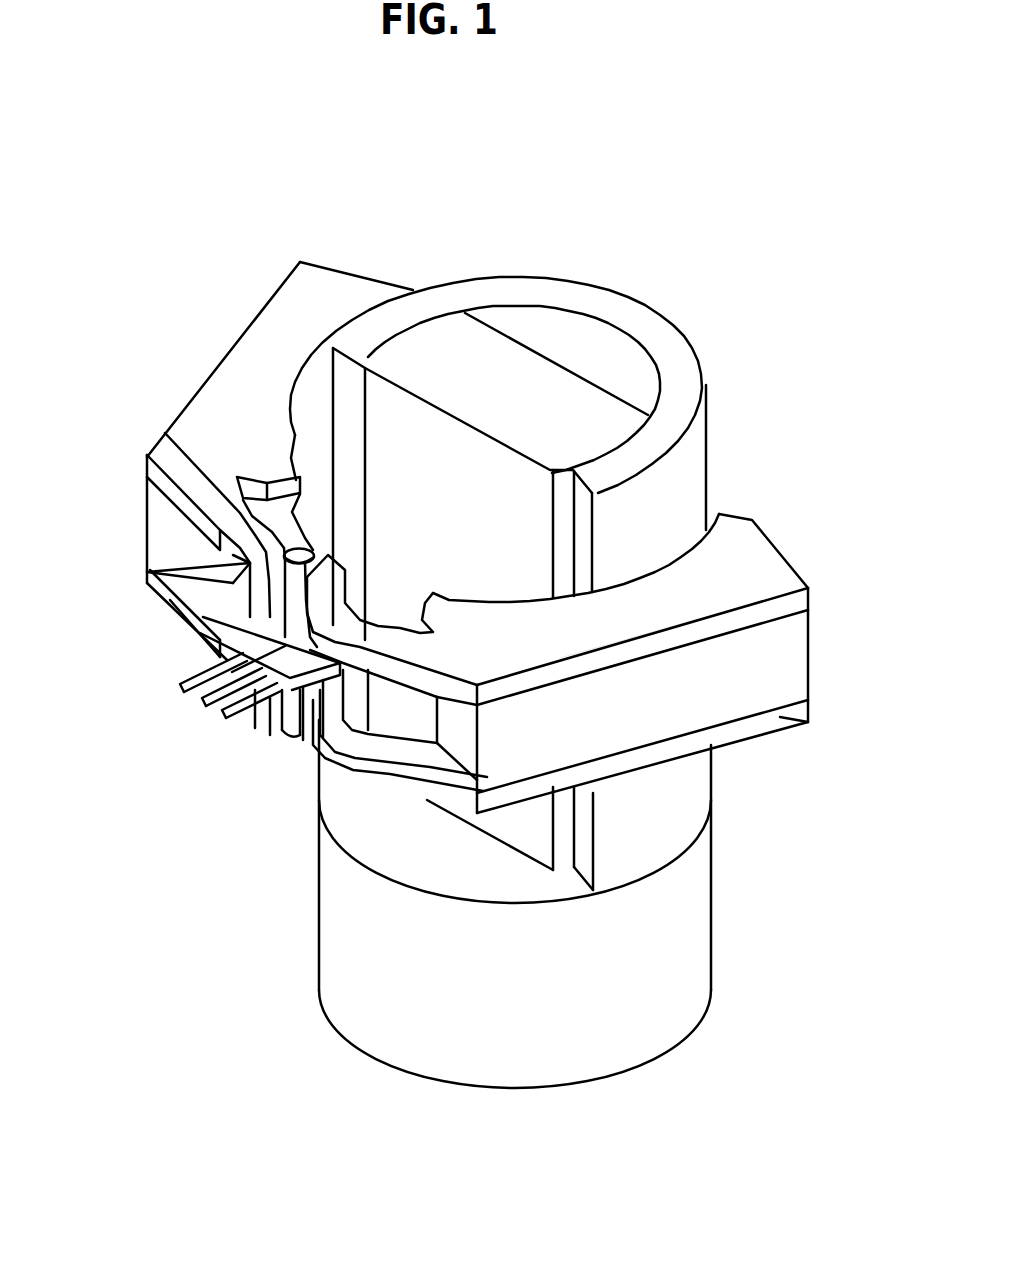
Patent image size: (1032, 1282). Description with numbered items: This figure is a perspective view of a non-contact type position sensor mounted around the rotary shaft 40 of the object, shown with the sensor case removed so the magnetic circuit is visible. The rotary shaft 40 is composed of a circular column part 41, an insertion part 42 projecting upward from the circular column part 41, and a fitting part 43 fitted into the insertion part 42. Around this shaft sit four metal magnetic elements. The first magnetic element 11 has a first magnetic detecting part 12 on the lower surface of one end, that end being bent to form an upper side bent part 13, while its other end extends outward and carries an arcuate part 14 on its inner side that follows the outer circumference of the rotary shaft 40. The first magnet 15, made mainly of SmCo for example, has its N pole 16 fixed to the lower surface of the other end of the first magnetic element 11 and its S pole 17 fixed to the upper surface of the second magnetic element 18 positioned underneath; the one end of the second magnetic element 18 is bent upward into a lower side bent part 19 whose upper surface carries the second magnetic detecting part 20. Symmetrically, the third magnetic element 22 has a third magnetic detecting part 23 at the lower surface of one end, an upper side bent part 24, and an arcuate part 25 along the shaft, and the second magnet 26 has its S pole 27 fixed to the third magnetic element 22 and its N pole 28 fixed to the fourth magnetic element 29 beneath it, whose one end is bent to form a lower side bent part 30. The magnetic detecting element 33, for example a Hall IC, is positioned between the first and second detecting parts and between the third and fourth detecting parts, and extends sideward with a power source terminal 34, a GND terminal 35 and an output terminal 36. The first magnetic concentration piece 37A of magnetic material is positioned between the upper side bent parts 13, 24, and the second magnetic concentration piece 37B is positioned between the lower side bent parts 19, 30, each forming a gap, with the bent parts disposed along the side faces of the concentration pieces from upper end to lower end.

The first magnetic element 11 is at (752, 580).
The first magnetic detecting part 12 is at (270, 723).
The upper side bent part 13 is at (223, 603).
The arcuate part 14 is at (663, 550).
The first magnet 15 is at (717, 680).
The N pole 16 is at (675, 660).
The S pole 17 is at (675, 717).
The second magnetic element 18 is at (808, 722).
The lower side bent part 19 is at (293, 740).
The second magnetic detecting part 20 is at (320, 733).
The third magnetic element 22 is at (247, 367).
The third magnetic detecting part 23 is at (227, 627).
The upper side bent part 24 is at (147, 572).
The arcuate part 25 is at (315, 365).
The second magnet 26 is at (167, 528).
The S pole 27 is at (147, 480).
The N pole 28 is at (152, 555).
The fourth magnetic element 29 is at (173, 603).
The lower side bent part 30 is at (257, 713).
The magnetic detecting element 33 is at (230, 650).
The power source terminal 34 is at (235, 665).
The GND terminal 35 is at (255, 690).
The output terminal 36 is at (245, 680).
The first magnetic concentration piece 37A is at (207, 480).
The second magnetic concentration piece 37B is at (303, 727).
The rotary shaft 40 is at (427, 1007).
The circular column part 41 is at (510, 1058).
The insertion part 42 is at (520, 383).
The fitting part 43 is at (487, 290).